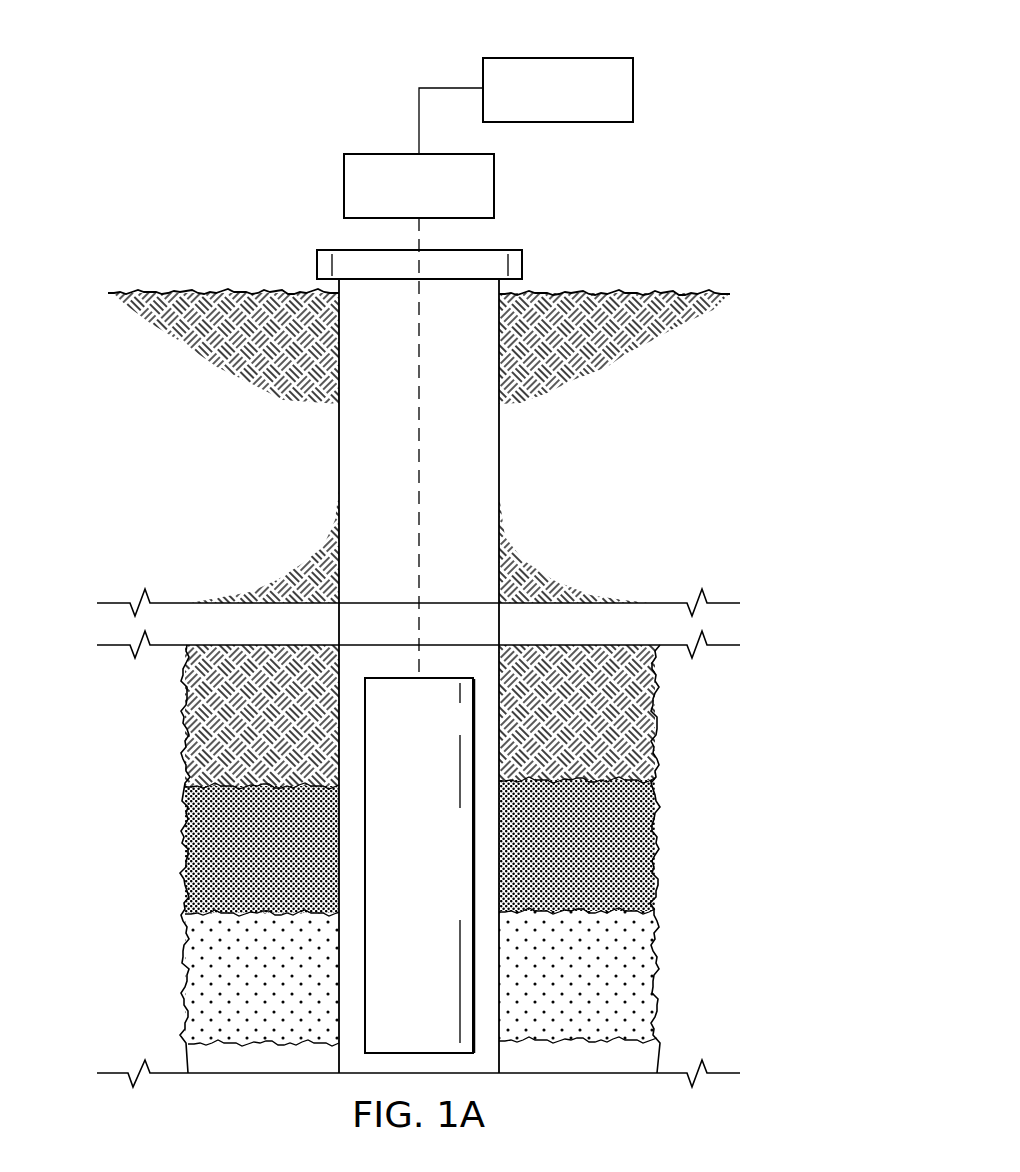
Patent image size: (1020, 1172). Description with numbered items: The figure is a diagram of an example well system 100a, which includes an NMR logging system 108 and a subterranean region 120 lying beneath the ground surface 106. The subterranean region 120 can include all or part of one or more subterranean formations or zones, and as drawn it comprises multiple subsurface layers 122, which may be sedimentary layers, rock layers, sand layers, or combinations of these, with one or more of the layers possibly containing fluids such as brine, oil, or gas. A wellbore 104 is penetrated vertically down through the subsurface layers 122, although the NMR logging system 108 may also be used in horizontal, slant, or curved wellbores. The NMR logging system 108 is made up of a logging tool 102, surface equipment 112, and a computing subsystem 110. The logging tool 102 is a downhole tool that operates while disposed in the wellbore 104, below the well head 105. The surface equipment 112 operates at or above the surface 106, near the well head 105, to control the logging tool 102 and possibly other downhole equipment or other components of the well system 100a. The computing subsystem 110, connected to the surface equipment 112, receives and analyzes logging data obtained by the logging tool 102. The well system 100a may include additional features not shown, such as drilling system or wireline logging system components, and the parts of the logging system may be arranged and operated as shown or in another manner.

The well system 100a is at (225, 110).
The logging tool 102 is at (398, 910).
The wellbore 104 is at (339, 470).
The well head 105 is at (317, 266).
The ground surface 106 is at (615, 293).
The NMR logging system 108 is at (732, 153).
The computing subsystem 110 is at (558, 58).
The surface equipment 112 is at (389, 154).
The subterranean region 120 is at (150, 855).
The subsurface layers 122 is at (660, 716).